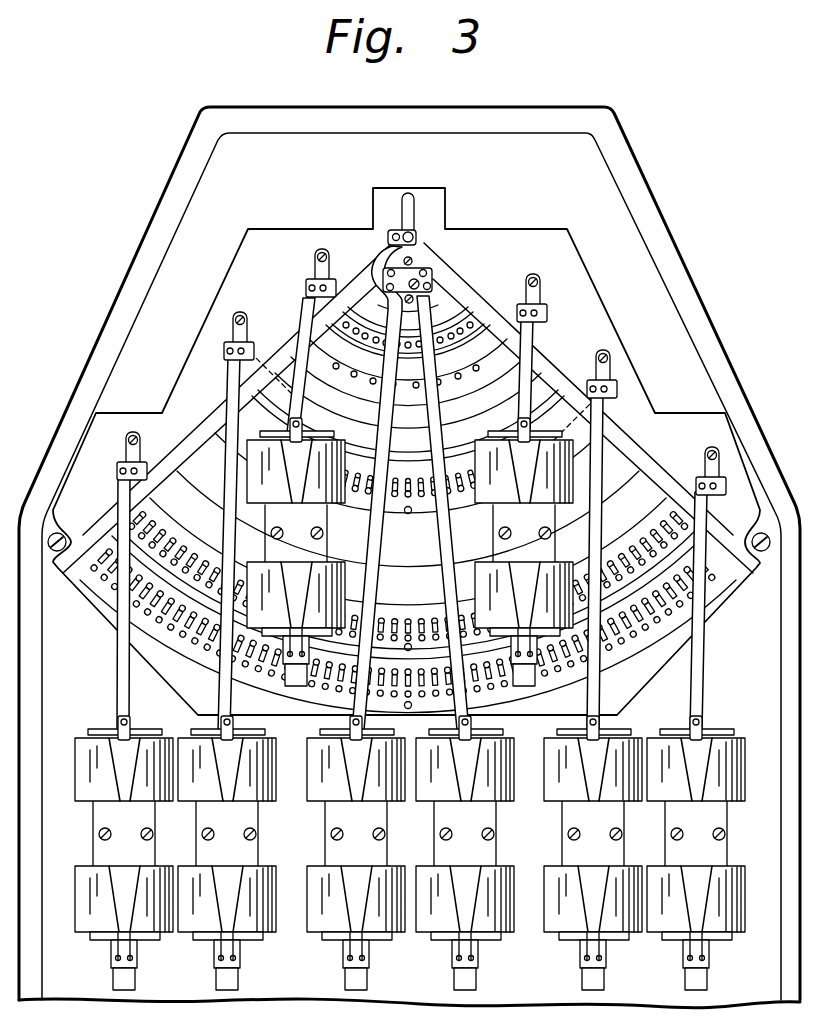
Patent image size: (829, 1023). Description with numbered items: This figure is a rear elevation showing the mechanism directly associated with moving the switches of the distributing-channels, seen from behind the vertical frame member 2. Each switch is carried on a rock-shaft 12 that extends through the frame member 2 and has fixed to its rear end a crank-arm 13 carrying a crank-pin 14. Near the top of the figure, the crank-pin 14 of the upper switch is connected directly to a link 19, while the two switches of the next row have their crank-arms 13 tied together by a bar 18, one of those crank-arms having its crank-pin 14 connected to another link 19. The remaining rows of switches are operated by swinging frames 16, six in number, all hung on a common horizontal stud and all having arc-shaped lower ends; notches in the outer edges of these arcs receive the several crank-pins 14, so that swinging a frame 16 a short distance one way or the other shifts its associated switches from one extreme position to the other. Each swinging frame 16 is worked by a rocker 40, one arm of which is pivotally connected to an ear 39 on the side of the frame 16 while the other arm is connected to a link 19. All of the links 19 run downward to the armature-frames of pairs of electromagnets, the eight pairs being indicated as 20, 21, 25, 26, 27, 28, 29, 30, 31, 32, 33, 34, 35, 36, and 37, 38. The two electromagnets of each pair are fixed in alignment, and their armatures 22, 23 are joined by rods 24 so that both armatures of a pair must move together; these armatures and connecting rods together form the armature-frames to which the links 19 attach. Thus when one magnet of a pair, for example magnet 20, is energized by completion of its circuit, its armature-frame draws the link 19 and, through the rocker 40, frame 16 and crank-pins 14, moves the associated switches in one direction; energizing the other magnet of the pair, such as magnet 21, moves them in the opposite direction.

The vertical frame member 2 is at (408, 496).
The rock-shaft 12 is at (256, 678).
The crank-arm 13 is at (394, 240).
The crank-pin 14 is at (400, 235).
The swinging frame 16 is at (450, 335).
The bar 18 is at (418, 263).
The link 19 is at (426, 300).
The electromagnet 20 is at (484, 791).
The electromagnet 21 is at (482, 887).
The armature 22 is at (312, 432).
The armature 23 is at (306, 640).
The rod 24 is at (130, 736).
The electromagnet 25 is at (376, 791).
The electromagnet 26 is at (374, 887).
The electromagnet 27 is at (300, 500).
The electromagnet 28 is at (308, 582).
The electromagnet 29 is at (540, 498).
The electromagnet 30 is at (540, 580).
The electromagnet 31 is at (246, 791).
The electromagnet 32 is at (244, 887).
The electromagnet 33 is at (614, 791).
The electromagnet 34 is at (612, 887).
The electromagnet 35 is at (142, 791).
The electromagnet 36 is at (144, 887).
The electromagnet 37 is at (716, 791).
The electromagnet 38 is at (696, 899).
The ear 39 is at (250, 346).
The rocker 40 is at (232, 376).